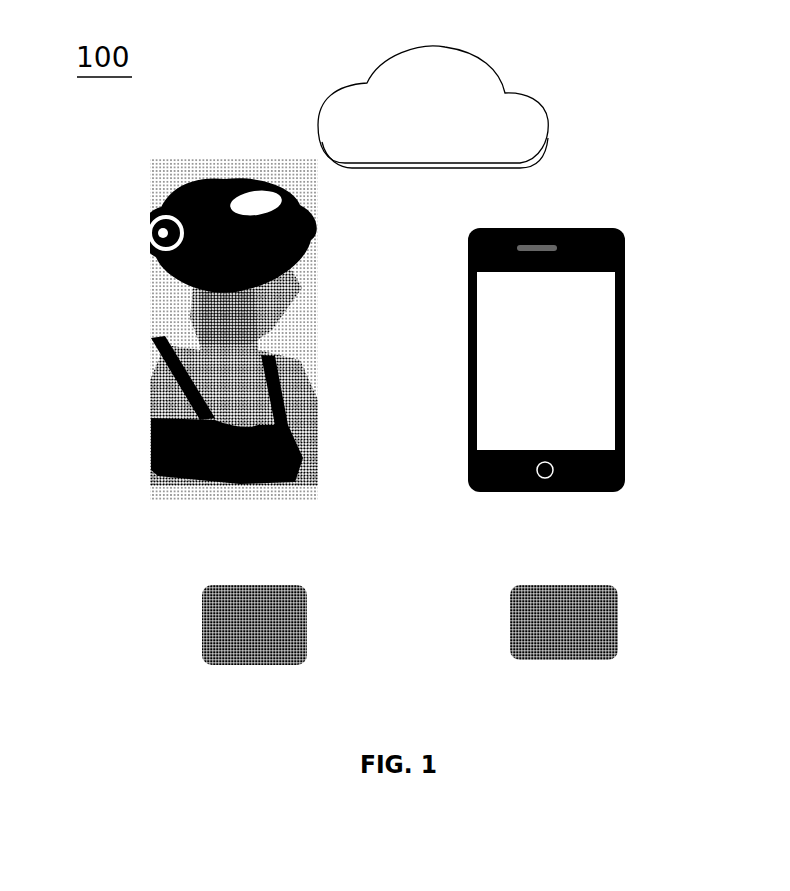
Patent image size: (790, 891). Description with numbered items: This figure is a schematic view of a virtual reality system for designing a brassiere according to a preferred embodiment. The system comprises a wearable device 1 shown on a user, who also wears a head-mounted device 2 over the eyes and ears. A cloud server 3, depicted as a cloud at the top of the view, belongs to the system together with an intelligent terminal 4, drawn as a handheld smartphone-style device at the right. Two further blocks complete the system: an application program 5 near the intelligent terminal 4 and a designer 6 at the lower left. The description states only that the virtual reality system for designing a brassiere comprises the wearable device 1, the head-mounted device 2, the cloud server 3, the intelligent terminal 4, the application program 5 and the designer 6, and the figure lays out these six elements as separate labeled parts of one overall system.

The wearable device 1 is at (158, 442).
The head-mounted device 2 is at (197, 229).
The cloud server 3 is at (533, 107).
The intelligent terminal 4 is at (605, 366).
The application program 5 is at (622, 605).
The designer 6 is at (187, 618).